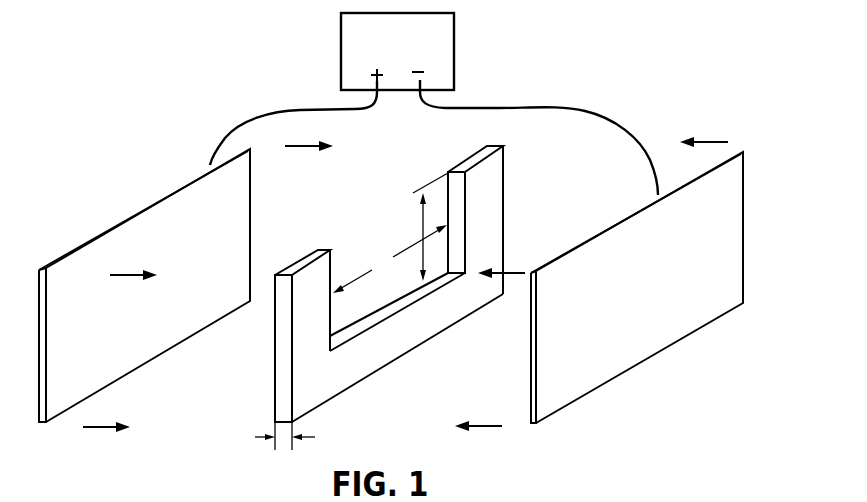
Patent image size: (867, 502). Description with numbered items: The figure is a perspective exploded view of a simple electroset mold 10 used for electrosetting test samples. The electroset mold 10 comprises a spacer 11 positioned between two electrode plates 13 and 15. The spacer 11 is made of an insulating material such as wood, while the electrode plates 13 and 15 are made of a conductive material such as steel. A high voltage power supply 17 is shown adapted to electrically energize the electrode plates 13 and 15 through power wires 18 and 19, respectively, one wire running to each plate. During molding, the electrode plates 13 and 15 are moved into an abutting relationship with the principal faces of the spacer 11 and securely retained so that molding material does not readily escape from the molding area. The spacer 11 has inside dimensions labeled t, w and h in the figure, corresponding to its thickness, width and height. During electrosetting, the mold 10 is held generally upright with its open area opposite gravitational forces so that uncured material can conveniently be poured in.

The electroset mold 10 is at (614, 66).
The spacer 11 is at (407, 340).
The electrode plate 13 is at (166, 335).
The electrode plate 15 is at (640, 350).
The high voltage power supply 17 is at (458, 57).
The power wire 18 is at (273, 110).
The power wire 19 is at (617, 118).